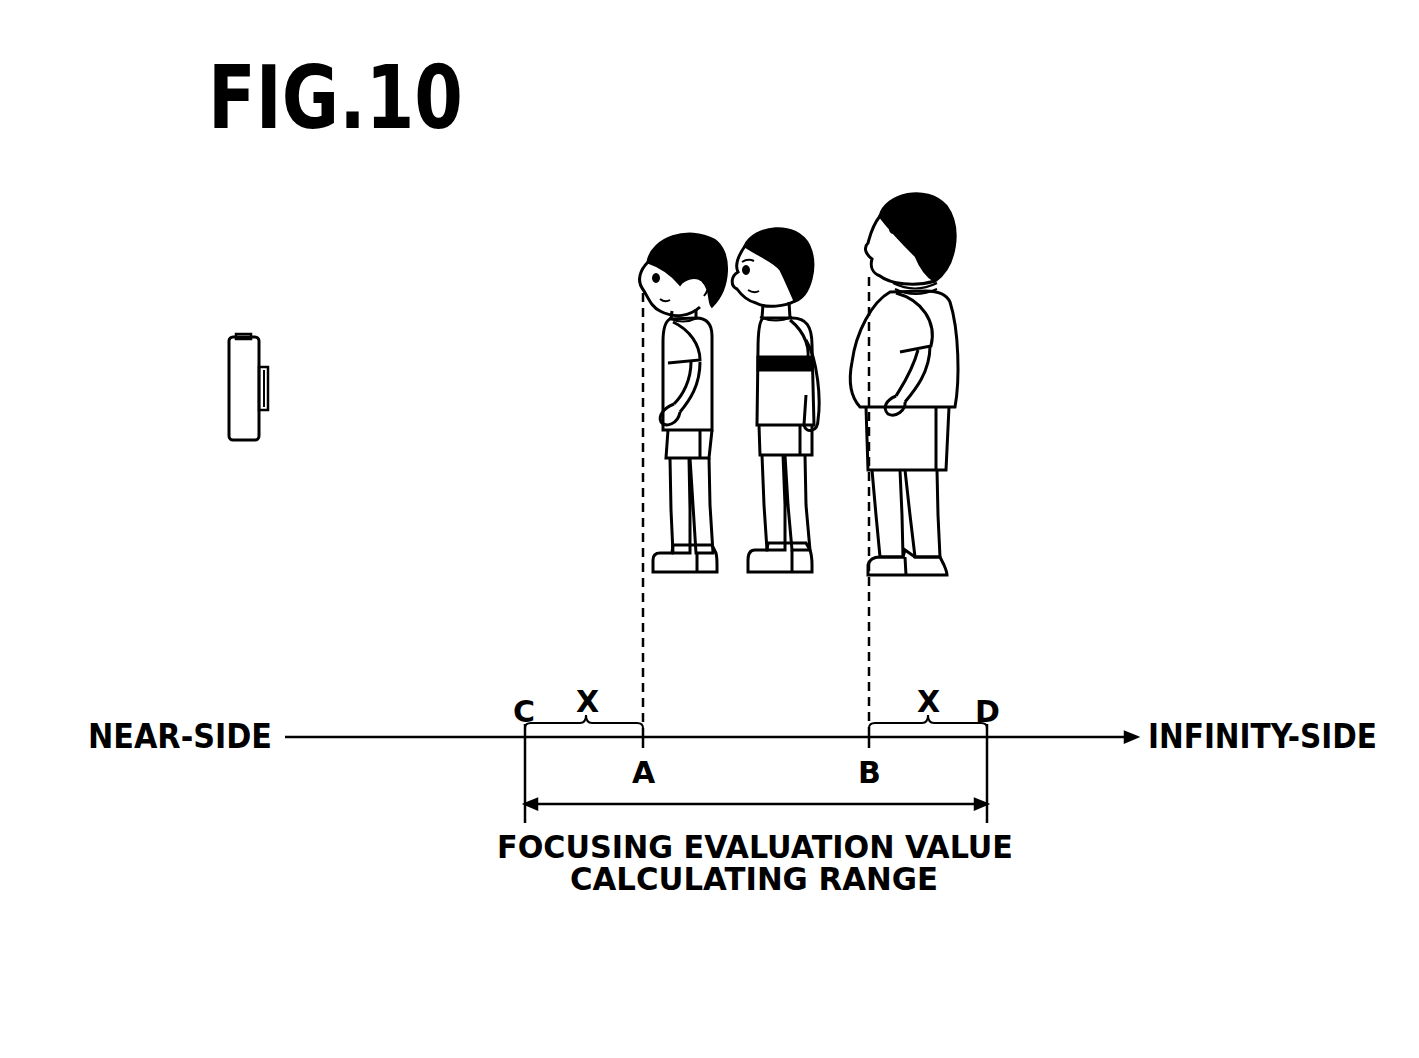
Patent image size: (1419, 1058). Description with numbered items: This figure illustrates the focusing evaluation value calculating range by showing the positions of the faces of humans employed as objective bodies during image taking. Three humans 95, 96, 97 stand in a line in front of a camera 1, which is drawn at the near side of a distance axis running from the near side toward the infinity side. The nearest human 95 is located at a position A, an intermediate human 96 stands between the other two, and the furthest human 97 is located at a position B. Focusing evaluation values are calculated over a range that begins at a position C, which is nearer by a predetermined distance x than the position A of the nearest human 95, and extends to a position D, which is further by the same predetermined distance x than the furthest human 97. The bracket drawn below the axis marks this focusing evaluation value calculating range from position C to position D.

The camera 1 is at (242, 337).
The human 95 is at (676, 232).
The human 96 is at (771, 225).
The human 97 is at (912, 190).